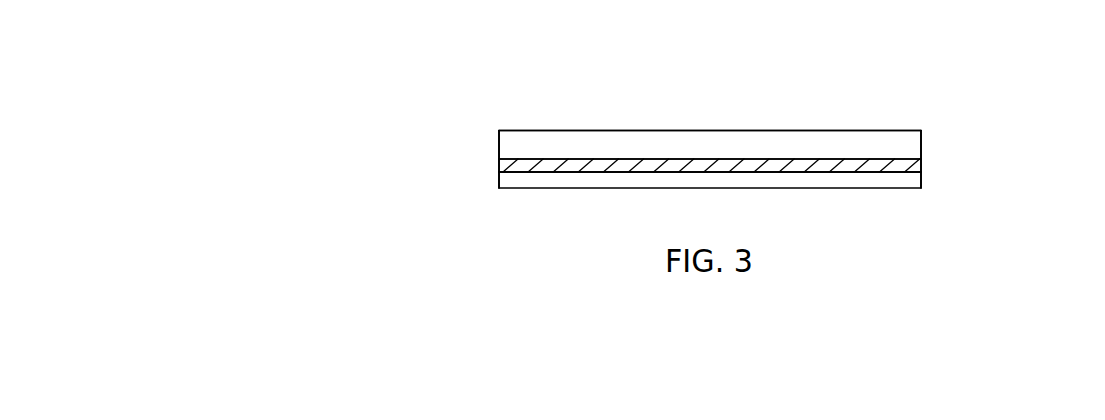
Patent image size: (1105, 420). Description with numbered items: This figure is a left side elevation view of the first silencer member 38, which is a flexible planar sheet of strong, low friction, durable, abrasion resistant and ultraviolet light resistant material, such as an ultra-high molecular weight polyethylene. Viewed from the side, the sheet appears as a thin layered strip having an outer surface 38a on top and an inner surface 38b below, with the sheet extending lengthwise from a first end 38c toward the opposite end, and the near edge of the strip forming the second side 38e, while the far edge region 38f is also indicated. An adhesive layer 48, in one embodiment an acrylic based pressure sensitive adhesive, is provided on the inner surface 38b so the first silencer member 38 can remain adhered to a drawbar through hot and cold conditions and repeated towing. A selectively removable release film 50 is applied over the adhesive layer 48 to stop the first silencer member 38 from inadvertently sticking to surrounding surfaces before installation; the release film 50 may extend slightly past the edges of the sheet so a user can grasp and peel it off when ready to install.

The first silencer member 38 is at (733, 152).
The outer surface 38a is at (853, 130).
The inner surface 38b is at (825, 162).
The first end 38c is at (890, 137).
The second side 38e is at (499, 148).
The second end 38f is at (921, 140).
The adhesive layer 48 is at (540, 163).
The release film 50 is at (612, 190).